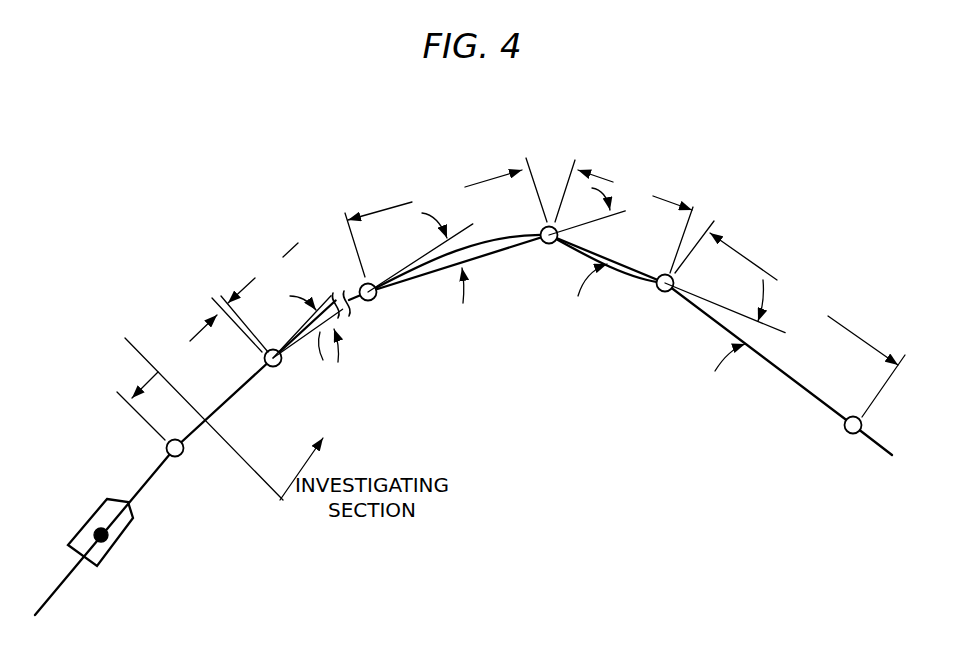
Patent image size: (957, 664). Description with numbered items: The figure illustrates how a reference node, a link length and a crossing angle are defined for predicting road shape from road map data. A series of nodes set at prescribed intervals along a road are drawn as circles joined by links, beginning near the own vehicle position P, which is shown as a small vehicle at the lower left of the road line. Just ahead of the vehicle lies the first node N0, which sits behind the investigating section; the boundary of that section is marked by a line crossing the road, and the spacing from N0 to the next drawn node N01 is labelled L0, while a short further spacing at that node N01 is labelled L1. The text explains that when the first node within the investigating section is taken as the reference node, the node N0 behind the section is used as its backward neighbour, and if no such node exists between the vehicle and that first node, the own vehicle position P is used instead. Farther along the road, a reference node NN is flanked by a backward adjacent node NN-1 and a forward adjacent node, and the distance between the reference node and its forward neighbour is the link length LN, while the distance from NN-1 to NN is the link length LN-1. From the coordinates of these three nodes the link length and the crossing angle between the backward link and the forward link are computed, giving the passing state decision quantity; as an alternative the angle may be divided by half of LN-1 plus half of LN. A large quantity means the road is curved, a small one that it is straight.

The own vehicle position P is at (101, 533).
The first node behind the investigating section N0 is at (180, 464).
The node N01 is at (282, 375).
The backward adjacent node NN-1 is at (381, 308).
The reference node NN is at (550, 250).
The distance L0 is at (167, 377).
The distance L1 is at (255, 297).
The link length before the node LN-1 is at (446, 217).
The link length LN is at (624, 216).